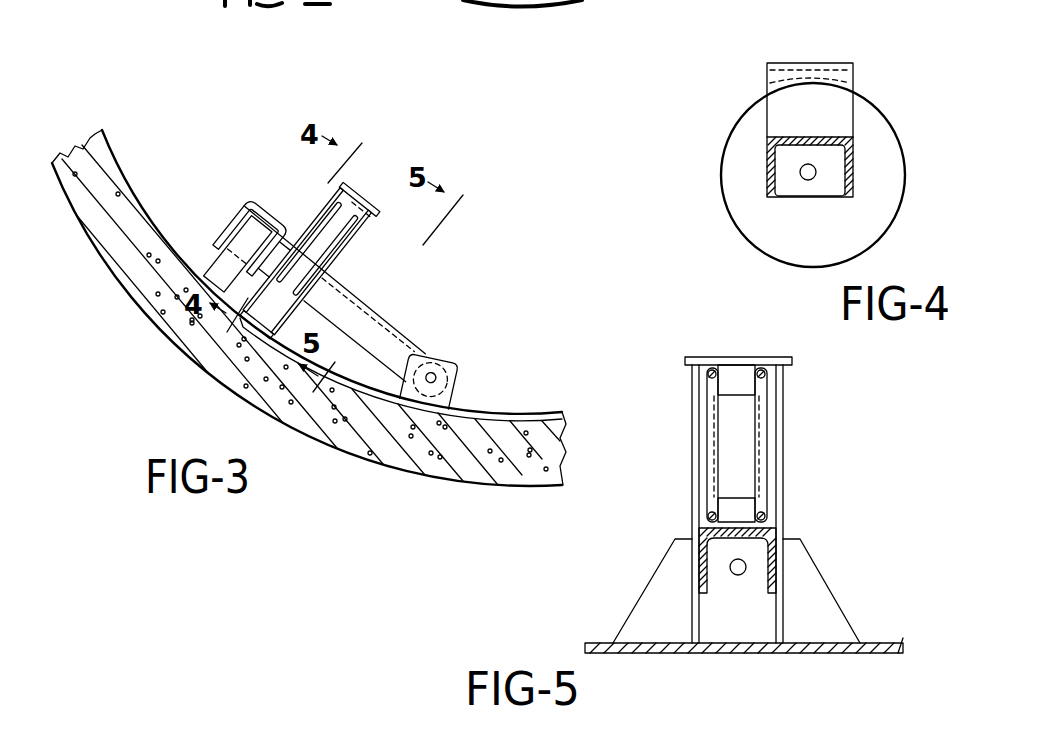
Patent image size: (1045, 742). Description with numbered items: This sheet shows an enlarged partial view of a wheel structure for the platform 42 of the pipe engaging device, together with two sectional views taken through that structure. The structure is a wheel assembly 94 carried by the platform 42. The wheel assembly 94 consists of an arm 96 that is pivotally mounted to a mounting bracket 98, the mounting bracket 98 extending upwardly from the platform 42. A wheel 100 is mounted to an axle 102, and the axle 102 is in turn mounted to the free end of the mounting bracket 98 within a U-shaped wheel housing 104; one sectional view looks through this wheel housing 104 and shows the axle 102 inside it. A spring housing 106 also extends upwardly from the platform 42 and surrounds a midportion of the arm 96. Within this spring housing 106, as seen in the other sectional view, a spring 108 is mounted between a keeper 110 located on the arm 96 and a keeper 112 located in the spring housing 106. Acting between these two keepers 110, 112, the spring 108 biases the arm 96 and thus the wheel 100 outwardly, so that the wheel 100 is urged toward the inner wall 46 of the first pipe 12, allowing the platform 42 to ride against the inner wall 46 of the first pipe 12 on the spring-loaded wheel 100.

In FIG. 3, the first pipe 12 is at (97, 163).
In FIG. 3, the inner wall 46 is at (127, 180).
In FIG. 3, the platform 42 is at (507, 410).
In FIG. 3, the wheel assembly 94 is at (468, 287).
In FIG. 3, the arm 96 is at (327, 316).
In FIG. 4, the arm 96 is at (853, 163).
In FIG. 5, the arm 96 is at (772, 552).
In FIG. 3, the mounting bracket 98 is at (452, 360).
In FIG. 5, the mounting bracket 98 is at (825, 602).
In FIG. 3, the wheel 100 is at (217, 273).
In FIG. 4, the wheel 100 is at (802, 238).
In FIG. 3, the axle 102 is at (238, 225).
In FIG. 4, the axle 102 is at (812, 180).
In FIG. 3, the U-shaped wheel housing 104 is at (250, 200).
In FIG. 4, the U-shaped wheel housing 104 is at (807, 63).
In FIG. 3, the spring housing 106 is at (343, 237).
In FIG. 5, the spring housing 106 is at (784, 461).
In FIG. 5, the spring 108 is at (706, 424).
In FIG. 5, the keeper 110 is at (740, 512).
In FIG. 5, the keeper 112 is at (757, 338).